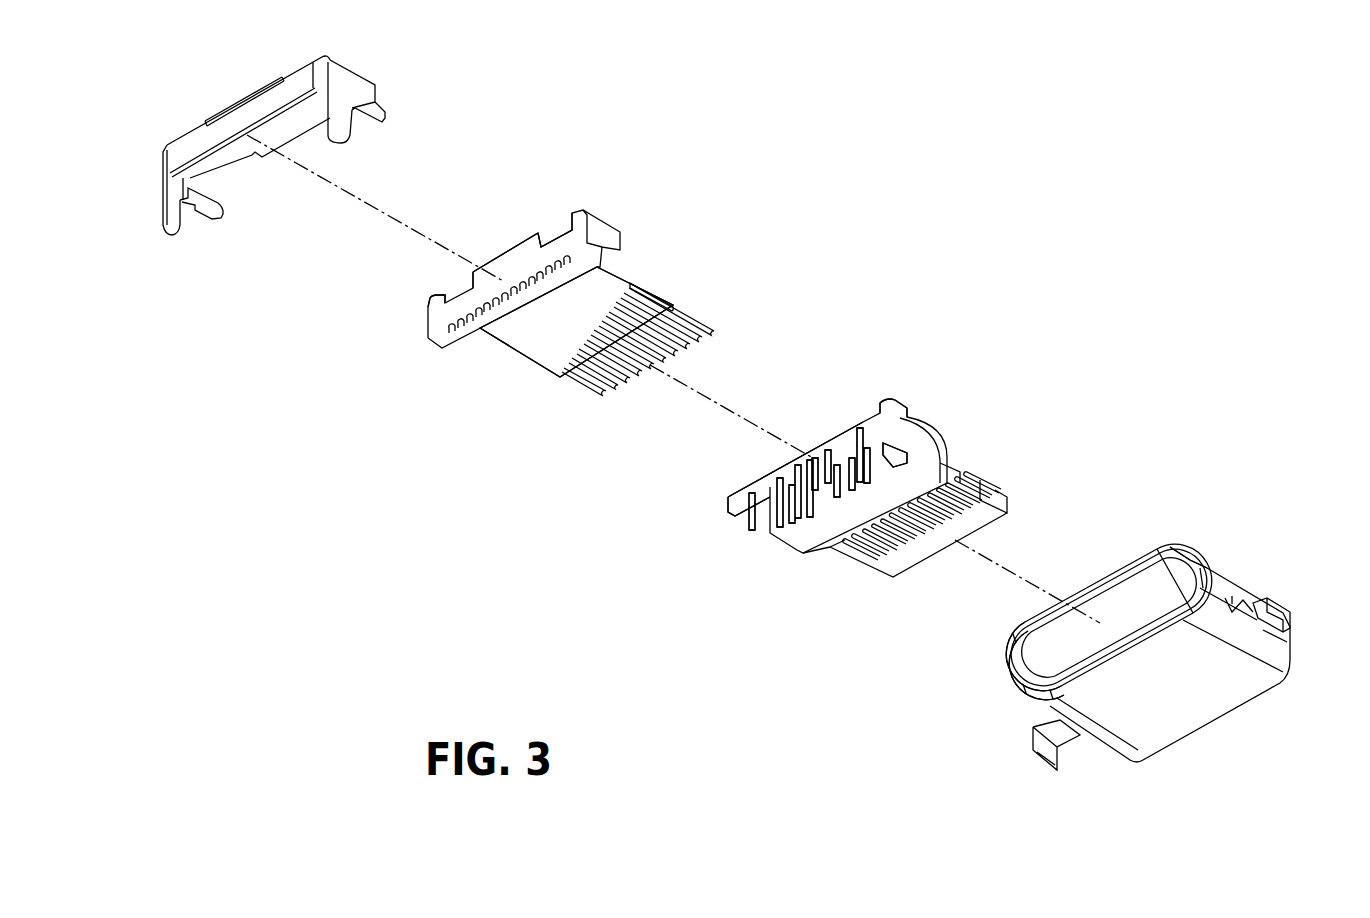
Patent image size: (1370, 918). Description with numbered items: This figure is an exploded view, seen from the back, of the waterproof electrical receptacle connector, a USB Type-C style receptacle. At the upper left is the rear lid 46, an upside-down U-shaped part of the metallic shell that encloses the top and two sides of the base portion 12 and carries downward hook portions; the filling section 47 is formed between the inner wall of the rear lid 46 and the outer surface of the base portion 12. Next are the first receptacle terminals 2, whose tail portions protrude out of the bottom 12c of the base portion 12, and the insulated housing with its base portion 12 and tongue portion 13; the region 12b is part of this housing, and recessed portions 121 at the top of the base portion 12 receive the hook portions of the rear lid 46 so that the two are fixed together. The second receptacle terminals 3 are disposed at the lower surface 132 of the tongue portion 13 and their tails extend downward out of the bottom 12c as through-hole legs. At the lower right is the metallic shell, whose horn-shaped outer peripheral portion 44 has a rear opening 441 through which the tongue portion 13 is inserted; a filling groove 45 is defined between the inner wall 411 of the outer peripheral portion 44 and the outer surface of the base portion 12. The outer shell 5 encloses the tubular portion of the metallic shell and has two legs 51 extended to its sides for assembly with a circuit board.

The first receptacle terminals 2 is at (707, 319).
The second receptacle terminals 3 is at (743, 528).
The outer shell 5 is at (1220, 573).
The base portion 12 is at (911, 404).
The housing rear portion 12b is at (507, 250).
The bottom of the base portion 12c is at (887, 430).
The tongue portion 13 is at (538, 371).
The outer peripheral portion 44 is at (1093, 578).
The filling groove 45 is at (1027, 652).
The rear lid 46 is at (170, 135).
The filling section 47 is at (175, 185).
The legs of the outer shell 51 is at (1280, 613).
The recessed portions 121 is at (447, 287).
The lower surface of the tongue portion 132 is at (930, 547).
The inner wall of the outer peripheral portion 411 is at (1032, 630).
The rear opening 441 is at (1173, 562).